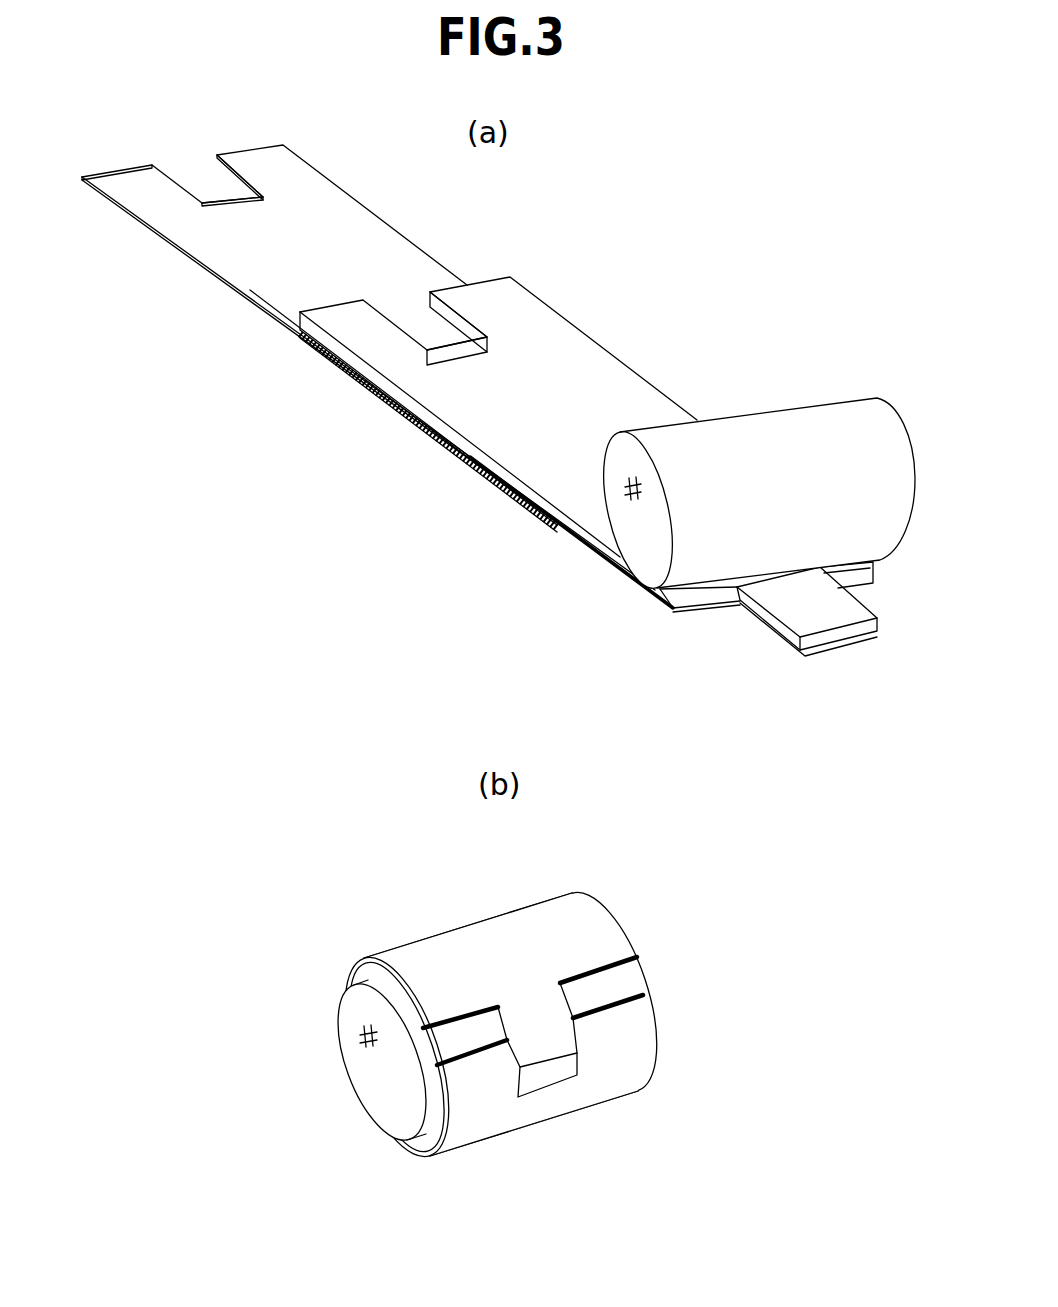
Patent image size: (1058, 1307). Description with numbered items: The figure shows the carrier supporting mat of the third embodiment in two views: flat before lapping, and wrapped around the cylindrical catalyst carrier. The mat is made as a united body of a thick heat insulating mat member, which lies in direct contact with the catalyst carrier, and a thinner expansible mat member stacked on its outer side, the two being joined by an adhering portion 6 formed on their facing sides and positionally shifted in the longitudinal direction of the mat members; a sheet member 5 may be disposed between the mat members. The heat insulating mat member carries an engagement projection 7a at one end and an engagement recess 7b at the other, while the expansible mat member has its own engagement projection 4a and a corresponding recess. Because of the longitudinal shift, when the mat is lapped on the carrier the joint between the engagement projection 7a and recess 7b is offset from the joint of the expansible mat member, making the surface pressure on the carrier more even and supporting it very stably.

The engagement projection 4a is at (553, 1035).
The sheet member 5 is at (577, 540).
The adhering portion 6 is at (443, 447).
The engagement projection 7a is at (832, 645).
The engagement recess 7b is at (410, 292).